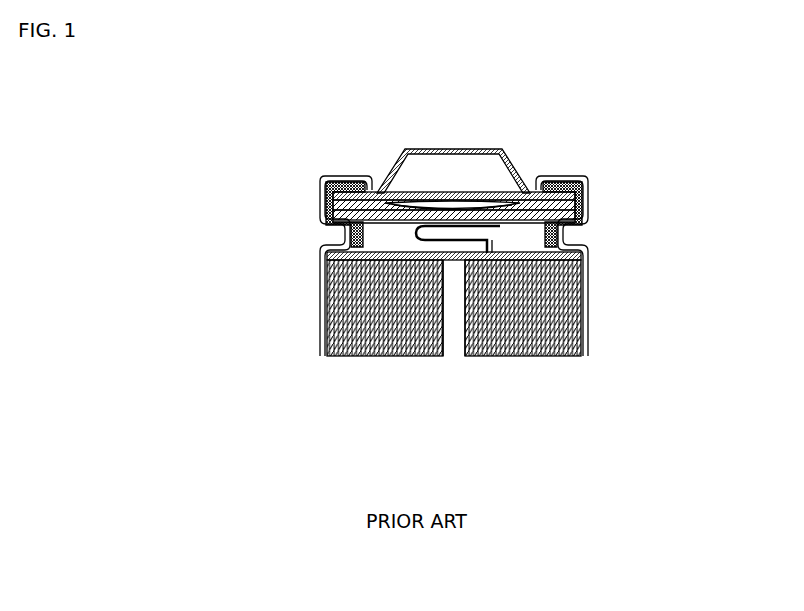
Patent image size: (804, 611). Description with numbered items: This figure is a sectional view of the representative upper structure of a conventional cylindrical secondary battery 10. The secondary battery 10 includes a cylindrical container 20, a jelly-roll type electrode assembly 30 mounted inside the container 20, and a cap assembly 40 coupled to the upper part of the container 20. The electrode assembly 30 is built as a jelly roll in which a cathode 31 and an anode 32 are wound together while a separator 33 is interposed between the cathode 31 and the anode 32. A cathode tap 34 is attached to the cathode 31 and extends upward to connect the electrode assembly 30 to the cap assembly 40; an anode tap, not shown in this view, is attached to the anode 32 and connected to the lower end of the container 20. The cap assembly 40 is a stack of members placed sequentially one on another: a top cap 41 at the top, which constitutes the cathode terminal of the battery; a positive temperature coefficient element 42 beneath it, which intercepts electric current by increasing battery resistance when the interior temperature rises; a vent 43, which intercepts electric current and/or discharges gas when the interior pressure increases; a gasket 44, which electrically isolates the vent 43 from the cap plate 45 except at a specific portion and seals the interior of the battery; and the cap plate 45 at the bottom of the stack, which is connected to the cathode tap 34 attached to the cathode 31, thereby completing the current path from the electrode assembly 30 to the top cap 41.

The secondary battery 10 is at (243, 130).
The cylindrical container 20 is at (583, 347).
The electrode assembly 30 is at (525, 430).
The cathode 31 is at (512, 357).
The anode 32 is at (425, 357).
The separator 33 is at (438, 357).
The cathode tap 34 is at (345, 303).
The cap assembly 40 is at (612, 145).
The top cap 41 is at (474, 150).
The positive temperature coefficient (PTC) element 42 is at (395, 192).
The vent 43 is at (330, 203).
The gasket 44 is at (590, 224).
The cap plate 45 is at (322, 232).